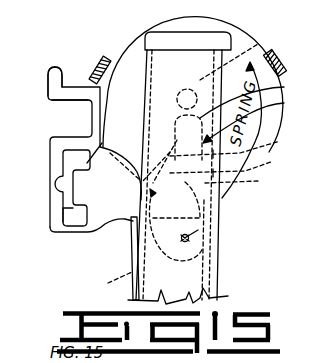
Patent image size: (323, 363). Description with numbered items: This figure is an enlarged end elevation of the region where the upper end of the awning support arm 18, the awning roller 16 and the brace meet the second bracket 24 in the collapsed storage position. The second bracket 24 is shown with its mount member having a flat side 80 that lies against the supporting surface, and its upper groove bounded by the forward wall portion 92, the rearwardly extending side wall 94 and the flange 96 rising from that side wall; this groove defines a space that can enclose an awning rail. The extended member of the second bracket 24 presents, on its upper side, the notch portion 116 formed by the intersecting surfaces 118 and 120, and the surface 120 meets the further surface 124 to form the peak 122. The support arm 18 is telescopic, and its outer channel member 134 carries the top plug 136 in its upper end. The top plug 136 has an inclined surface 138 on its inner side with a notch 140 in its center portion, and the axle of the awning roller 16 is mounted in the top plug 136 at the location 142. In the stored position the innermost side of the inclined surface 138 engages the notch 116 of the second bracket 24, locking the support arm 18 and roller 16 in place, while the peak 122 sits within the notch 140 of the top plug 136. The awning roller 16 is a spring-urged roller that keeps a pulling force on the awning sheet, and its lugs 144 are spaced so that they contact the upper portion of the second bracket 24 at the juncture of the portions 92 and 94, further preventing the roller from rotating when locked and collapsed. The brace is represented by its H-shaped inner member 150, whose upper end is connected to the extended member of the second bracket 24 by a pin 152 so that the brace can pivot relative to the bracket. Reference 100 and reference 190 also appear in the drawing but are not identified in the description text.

The awning roller 16 is at (276, 38).
The awning support arm 18 is at (224, 258).
The second bracket 24 is at (90, 239).
The flat side 80 is at (56, 187).
The wall portion 92 is at (92, 123).
The side wall 94 is at (72, 98).
The flange 96 is at (53, 68).
The slot lower opening 100 is at (63, 207).
The notch portion 116 is at (105, 281).
The surface 118 is at (131, 166).
The surface 120 is at (235, 165).
The peak 122 is at (241, 146).
The surface 124 is at (246, 185).
The outer channel member 134 is at (223, 207).
The top plug 136 is at (223, 42).
The inclined surface 138 is at (260, 120).
The notch 140 is at (258, 99).
The axle mounting 142 is at (262, 48).
The lugs 144 is at (106, 57).
The inner member 150 is at (132, 257).
The pin 152 is at (221, 236).
The element 190 is at (309, 285).